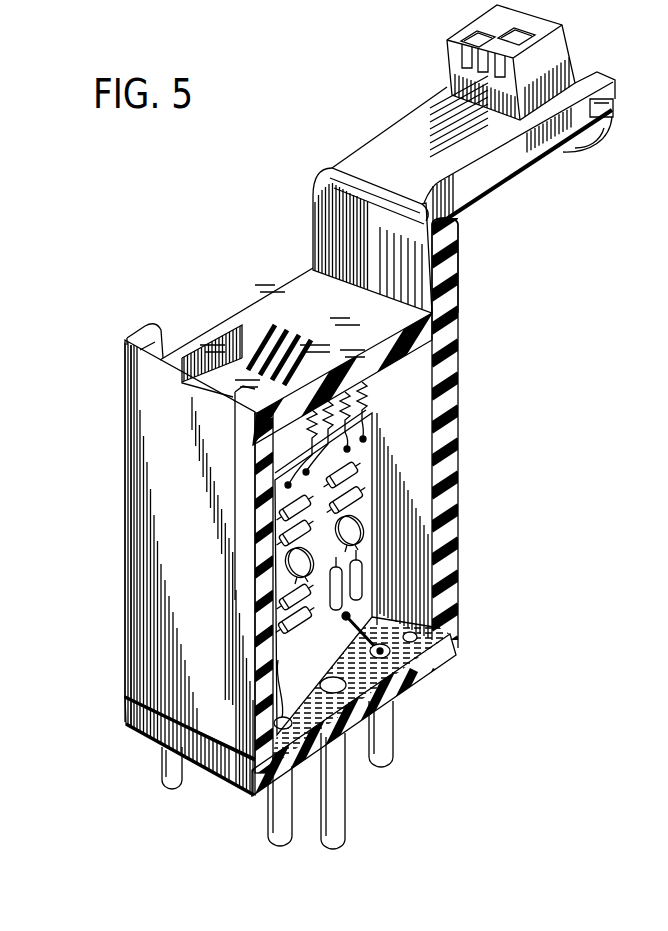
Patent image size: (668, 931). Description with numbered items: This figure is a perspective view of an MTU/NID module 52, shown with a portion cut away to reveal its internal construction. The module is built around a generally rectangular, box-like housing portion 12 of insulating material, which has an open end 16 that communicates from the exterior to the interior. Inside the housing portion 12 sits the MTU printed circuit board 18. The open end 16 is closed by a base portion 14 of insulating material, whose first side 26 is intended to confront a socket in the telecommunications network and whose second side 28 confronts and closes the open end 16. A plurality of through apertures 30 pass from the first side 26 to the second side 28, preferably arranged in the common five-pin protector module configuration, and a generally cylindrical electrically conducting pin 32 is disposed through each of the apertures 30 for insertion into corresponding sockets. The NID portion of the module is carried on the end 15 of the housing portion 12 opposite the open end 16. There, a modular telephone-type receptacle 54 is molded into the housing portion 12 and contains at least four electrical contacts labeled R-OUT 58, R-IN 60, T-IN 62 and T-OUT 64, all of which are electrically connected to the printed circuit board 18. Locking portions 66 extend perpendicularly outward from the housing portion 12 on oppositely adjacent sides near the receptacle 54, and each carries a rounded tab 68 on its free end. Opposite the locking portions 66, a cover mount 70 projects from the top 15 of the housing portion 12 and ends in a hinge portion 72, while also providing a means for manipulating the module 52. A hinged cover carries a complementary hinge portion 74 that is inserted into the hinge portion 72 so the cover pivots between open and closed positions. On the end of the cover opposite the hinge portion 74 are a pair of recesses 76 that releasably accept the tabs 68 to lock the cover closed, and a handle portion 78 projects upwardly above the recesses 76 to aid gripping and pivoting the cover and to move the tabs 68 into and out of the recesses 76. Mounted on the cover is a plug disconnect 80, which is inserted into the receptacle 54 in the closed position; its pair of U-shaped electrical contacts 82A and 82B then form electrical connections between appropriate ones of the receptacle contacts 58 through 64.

The housing portion 12 is at (157, 657).
The base portion 14 is at (137, 727).
The end (top) of housing portion 15 is at (310, 270).
The open end 16 is at (455, 623).
The MTU printed circuit board 18 is at (364, 505).
The first side 26 is at (220, 783).
The second side 28 is at (423, 665).
The through apertures 30 is at (380, 650).
The electrically conducting element (pin) 32 is at (167, 774).
The MTU/NID module 52 is at (472, 357).
The RJ-11 receptacle 54 is at (222, 337).
The R-OUT electrical contact 58 is at (258, 326).
The R-IN electrical contact 60 is at (268, 322).
The T-IN electrical contact 62 is at (232, 405).
The T-OUT electrical contact 64 is at (376, 370).
The locking portions 66 is at (115, 347).
The tab 68 is at (150, 345).
The cover mount 70 is at (404, 268).
The hinge portion (of cover mount) 72 is at (316, 192).
The hinge portion (of hinged cover) 74 is at (337, 172).
The recesses 76 is at (618, 99).
The handle portion 78 is at (580, 154).
The RJ-11 plug (plug disconnect) 80 is at (520, 16).
The U-shaped electrical contact 82A is at (446, 34).
The U-shaped electrical contact 82B is at (530, 35).